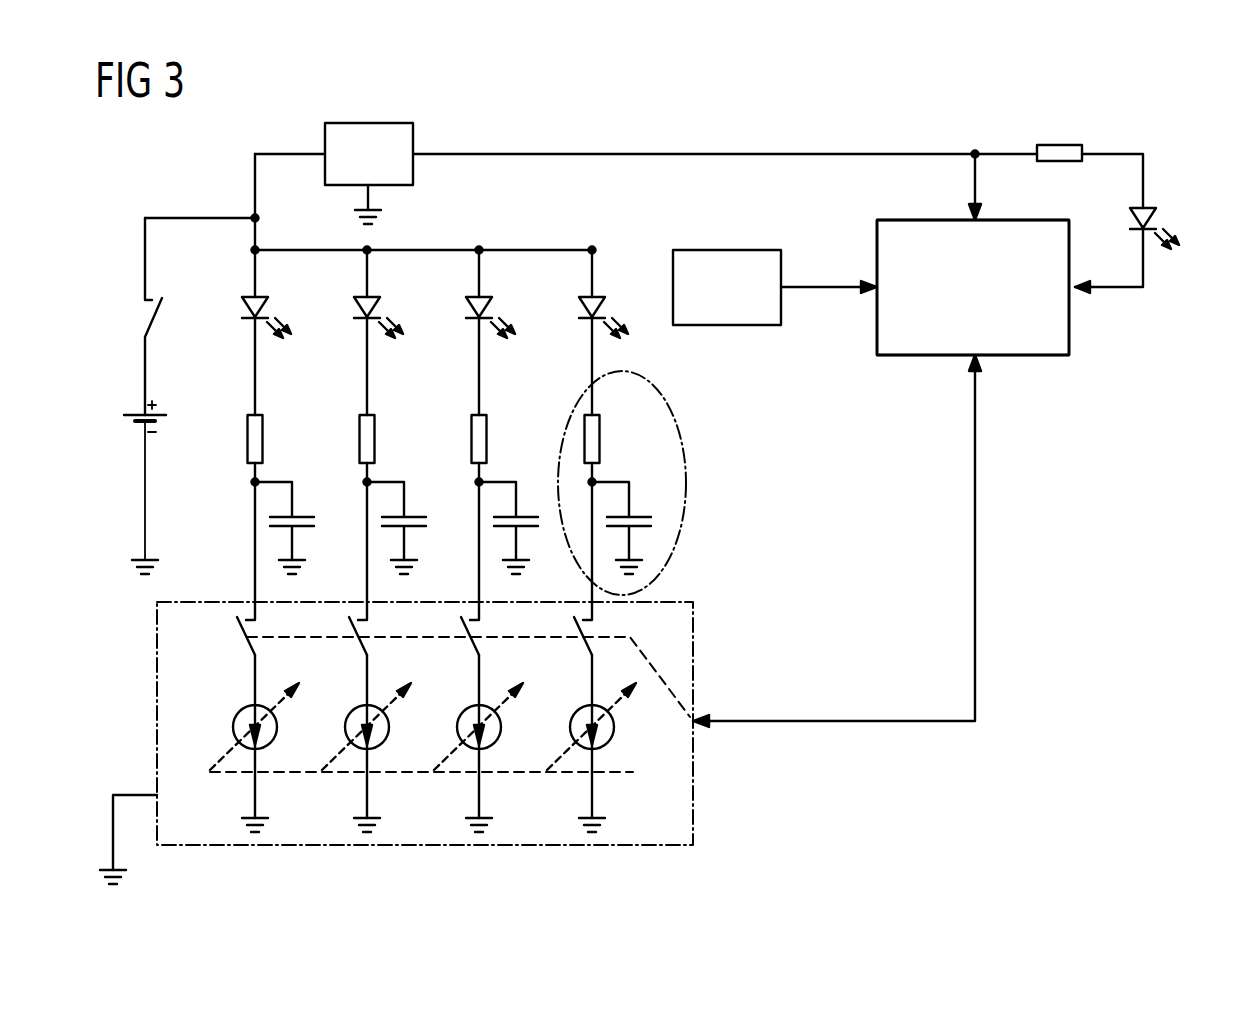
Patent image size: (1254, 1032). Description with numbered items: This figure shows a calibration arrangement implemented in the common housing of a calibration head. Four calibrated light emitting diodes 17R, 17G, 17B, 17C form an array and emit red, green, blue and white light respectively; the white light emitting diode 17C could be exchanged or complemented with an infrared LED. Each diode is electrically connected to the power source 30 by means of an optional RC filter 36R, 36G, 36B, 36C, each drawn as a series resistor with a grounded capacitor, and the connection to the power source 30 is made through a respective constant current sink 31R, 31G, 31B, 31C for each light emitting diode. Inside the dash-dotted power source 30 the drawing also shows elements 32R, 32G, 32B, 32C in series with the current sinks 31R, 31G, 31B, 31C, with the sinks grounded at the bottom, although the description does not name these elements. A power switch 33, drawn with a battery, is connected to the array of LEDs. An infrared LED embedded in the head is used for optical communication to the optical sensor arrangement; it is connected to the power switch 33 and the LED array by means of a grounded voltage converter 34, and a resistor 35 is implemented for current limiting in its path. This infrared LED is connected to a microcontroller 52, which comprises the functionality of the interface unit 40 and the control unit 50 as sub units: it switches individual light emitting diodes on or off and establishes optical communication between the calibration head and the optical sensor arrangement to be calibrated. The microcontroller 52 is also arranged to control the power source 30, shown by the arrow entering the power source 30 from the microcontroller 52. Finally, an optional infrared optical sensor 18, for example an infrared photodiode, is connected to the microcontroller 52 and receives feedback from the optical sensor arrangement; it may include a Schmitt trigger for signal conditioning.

The light emitting diode 17R is at (243, 308).
The light emitting diode 17G is at (355, 308).
The light emitting diode 17B is at (467, 308).
The white light emitting diode 17C is at (580, 308).
The infrared optical sensor 18 is at (728, 250).
The power source 30 is at (157, 709).
The constant current sink 31R is at (280, 722).
The constant current sink 31G is at (392, 722).
The constant current sink 31B is at (505, 722).
The constant current sink 31C is at (612, 735).
The red channel switch 32R is at (243, 645).
The green channel switch 32G is at (355, 645).
The blue channel switch 32B is at (467, 645).
The cyan channel switch 32C is at (580, 645).
The power switch 33 is at (150, 320).
The grounded voltage converter 34 is at (369, 123).
The resistor 35 is at (1060, 145).
The RC filter 36R is at (228, 440).
The RC filter 36G is at (338, 440).
The RC filter 36B is at (451, 440).
The RC filter 36C is at (688, 480).
The interface unit 40 is at (920, 355).
The control unit 50 is at (1017, 355).
The microcontroller 52 is at (925, 230).